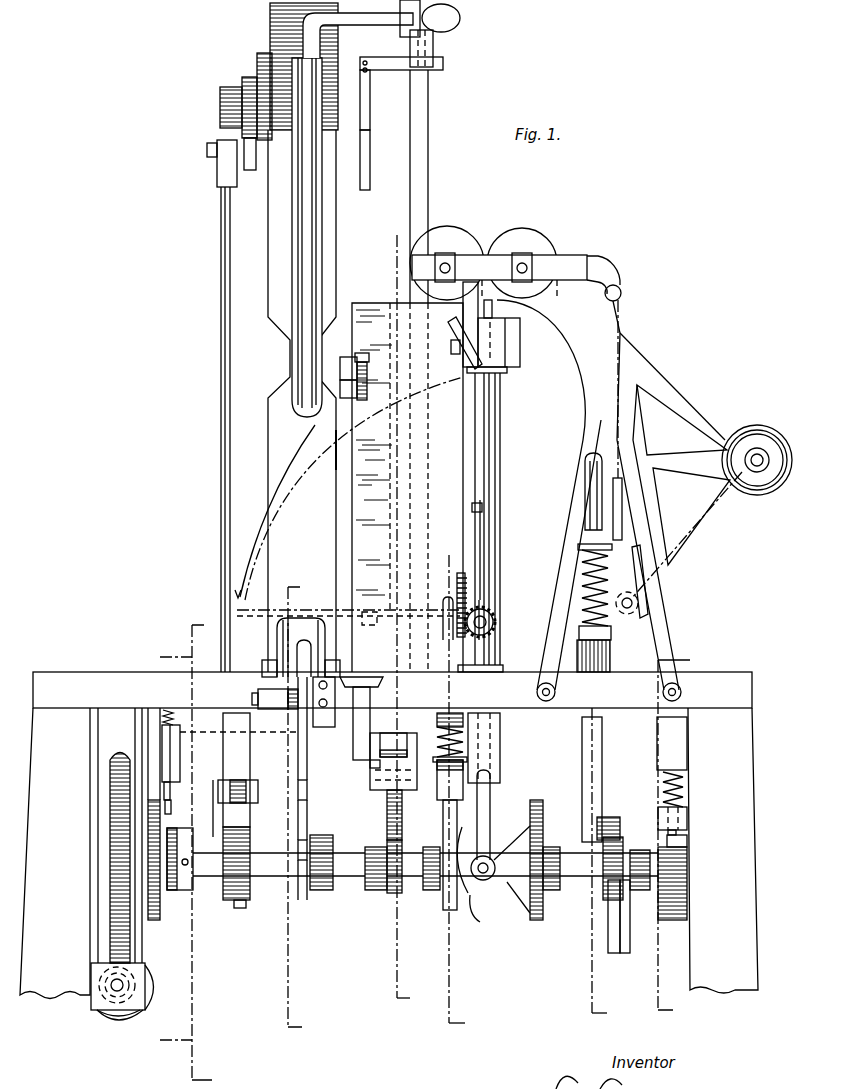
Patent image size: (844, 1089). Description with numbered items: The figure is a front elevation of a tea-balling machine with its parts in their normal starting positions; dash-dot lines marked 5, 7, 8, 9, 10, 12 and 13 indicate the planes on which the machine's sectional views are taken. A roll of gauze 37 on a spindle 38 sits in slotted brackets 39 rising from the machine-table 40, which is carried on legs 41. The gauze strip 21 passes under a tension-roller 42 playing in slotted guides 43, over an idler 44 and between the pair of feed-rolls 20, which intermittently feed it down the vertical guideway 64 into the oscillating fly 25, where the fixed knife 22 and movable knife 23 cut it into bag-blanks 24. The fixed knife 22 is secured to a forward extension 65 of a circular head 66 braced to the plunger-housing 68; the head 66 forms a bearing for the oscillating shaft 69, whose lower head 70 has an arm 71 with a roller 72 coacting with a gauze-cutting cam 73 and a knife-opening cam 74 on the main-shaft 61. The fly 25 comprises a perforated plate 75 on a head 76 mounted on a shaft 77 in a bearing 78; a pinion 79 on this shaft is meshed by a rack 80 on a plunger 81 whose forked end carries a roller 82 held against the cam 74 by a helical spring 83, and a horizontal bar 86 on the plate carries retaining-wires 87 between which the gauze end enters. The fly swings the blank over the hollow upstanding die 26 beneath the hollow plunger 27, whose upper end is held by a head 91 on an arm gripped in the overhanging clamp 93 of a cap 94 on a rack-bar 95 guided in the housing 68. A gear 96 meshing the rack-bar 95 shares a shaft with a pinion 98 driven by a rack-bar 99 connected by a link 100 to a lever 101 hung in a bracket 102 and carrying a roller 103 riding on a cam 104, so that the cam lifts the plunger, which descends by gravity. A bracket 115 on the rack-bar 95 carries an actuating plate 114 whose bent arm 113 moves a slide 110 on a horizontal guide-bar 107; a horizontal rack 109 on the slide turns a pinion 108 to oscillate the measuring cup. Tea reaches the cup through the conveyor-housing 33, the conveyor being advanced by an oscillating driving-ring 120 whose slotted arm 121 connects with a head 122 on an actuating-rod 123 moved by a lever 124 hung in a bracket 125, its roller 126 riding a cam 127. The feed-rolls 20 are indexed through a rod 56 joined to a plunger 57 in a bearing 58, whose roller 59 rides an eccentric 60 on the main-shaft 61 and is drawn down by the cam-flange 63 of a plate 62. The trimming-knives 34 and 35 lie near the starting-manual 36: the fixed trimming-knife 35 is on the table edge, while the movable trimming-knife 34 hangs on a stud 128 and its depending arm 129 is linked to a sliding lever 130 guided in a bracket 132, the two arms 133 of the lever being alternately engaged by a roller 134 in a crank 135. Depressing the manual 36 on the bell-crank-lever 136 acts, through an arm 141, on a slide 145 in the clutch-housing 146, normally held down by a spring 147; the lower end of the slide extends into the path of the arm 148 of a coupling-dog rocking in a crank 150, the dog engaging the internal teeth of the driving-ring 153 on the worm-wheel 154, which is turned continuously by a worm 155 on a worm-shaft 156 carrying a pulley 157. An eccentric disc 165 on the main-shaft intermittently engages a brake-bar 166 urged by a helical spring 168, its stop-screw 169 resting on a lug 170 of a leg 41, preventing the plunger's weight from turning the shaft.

The section line 5 is at (167, 850).
The section line 7 is at (209, 855).
The section line 8 is at (301, 812).
The section line 9 is at (460, 786).
The section line 10 is at (407, 614).
The section line 12 is at (610, 867).
The section line 13 is at (685, 839).
The feed rolls 20 is at (452, 237).
The lever arm 21 is at (604, 280).
The head plate 22 is at (450, 323).
The flange 23 is at (508, 371).
The plunger rod 24 is at (488, 423).
The rod 25 is at (486, 563).
The cylinder 26 is at (277, 640).
The guide column 27 is at (292, 262).
The pipe 33 is at (275, 15).
The piston rod 34 is at (297, 653).
The bracket 35 is at (313, 656).
The valve stem 36 is at (385, 681).
The wheel 37 is at (765, 426).
The hub 38 is at (763, 472).
The lever frame 39 is at (590, 405).
The base beam 40 is at (745, 706).
The frame wall 41 is at (389, 853).
The pin 42 is at (638, 598).
The link 43 is at (649, 569).
The pivot 44 is at (621, 293).
The spring rod 56 is at (585, 497).
The bar 57 is at (582, 737).
The spring seat 58 is at (606, 661).
The collar 59 is at (607, 817).
The gear 60 is at (605, 891).
The shaft 61 is at (358, 877).
The bracket 62 is at (626, 932).
The bearing 63 is at (608, 942).
The stem 64 is at (492, 306).
The blade 65 is at (455, 348).
The block 66 is at (520, 332).
The plate shading 68 is at (360, 478).
The rod 69 is at (500, 459).
The guide 70 is at (500, 775).
The lever 71 is at (490, 813).
The disc 72 is at (473, 896).
The bevel gear 73 is at (530, 827).
The segment 74 is at (464, 921).
The rod 75 is at (498, 488).
The rod 76 is at (486, 584).
The gear 77 is at (497, 621).
The rod foot 78 is at (484, 652).
The hub 79 is at (489, 627).
The rack 80 is at (455, 587).
The bar 81 is at (443, 640).
The block 82 is at (449, 801).
The spring 83 is at (440, 713).
The stop 86 is at (470, 508).
The rod 87 is at (462, 466).
The tube 91 is at (292, 60).
The ball 93 is at (461, 19).
The clamp 94 is at (434, 48).
The column 95 is at (428, 150).
The path line 96 is at (418, 412).
The plate 98 is at (392, 450).
The plate 99 is at (390, 550).
The block 100 is at (372, 783).
The cam 101 is at (389, 793).
The bar 102 is at (444, 845).
The cam 103 is at (404, 796).
The shaft section 104 is at (398, 866).
The pin 107 is at (347, 392).
The link 108 is at (336, 455).
The knob 109 is at (362, 362).
The bracket 110 is at (340, 367).
The rod 113 is at (370, 154).
The rod 114 is at (370, 113).
The bracket 115 is at (393, 53).
The gear 120 is at (247, 88).
The rod 121 is at (253, 170).
The block 122 is at (217, 173).
The rod 123 is at (220, 426).
The gear 124 is at (246, 790).
The lever 125 is at (241, 760).
The gear 126 is at (252, 830).
The stub 127 is at (240, 908).
The bolt 128 is at (252, 699).
The rod 129 is at (296, 731).
The block 130 is at (380, 751).
The plate 132 is at (371, 764).
The rod 133 is at (302, 900).
The rod 134 is at (307, 845).
The collar 135 is at (330, 892).
The rod 136 is at (298, 790).
The rod 141 is at (180, 745).
The lever 145 is at (162, 737).
The guide 146 is at (140, 787).
The spring 147 is at (168, 710).
The rod 148 is at (165, 806).
The block 150 is at (195, 882).
The gear 153 is at (155, 922).
The rack 154 is at (110, 895).
The bearing 155 is at (119, 997).
The pin 156 is at (114, 991).
The cover 157 is at (139, 1016).
The gear 165 is at (688, 906).
The block 166 is at (688, 819).
The spring 168 is at (685, 787).
The nut 169 is at (690, 833).
The plate 170 is at (688, 844).